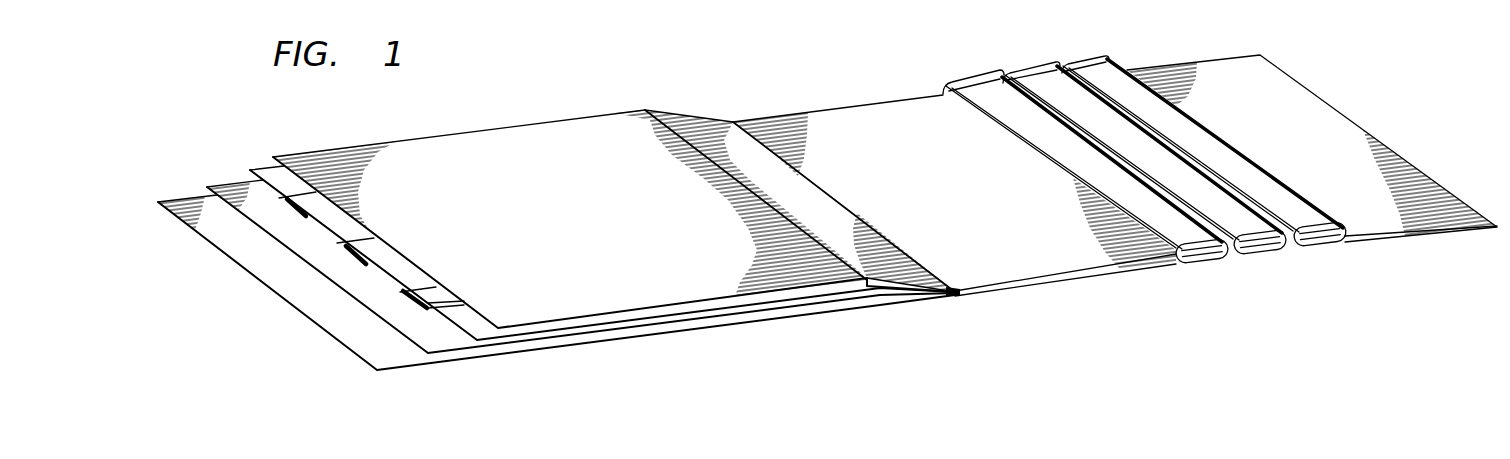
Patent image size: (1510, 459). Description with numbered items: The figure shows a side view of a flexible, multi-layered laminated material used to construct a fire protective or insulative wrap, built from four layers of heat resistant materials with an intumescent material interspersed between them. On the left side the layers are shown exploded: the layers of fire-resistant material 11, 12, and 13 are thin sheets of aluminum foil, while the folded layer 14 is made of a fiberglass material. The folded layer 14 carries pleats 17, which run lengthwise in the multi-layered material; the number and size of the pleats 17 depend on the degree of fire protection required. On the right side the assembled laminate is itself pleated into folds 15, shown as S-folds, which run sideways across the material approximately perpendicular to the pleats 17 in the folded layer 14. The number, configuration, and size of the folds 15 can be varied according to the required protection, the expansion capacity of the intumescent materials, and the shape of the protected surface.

The layer of fire-resistant material 11 is at (470, 134).
The layer of fire-resistant material 12 is at (222, 185).
The layer of fire-resistant material 13 is at (177, 202).
The folded layer 14 is at (263, 165).
The folds 15 is at (1029, 73).
The pleats 17 is at (290, 203).